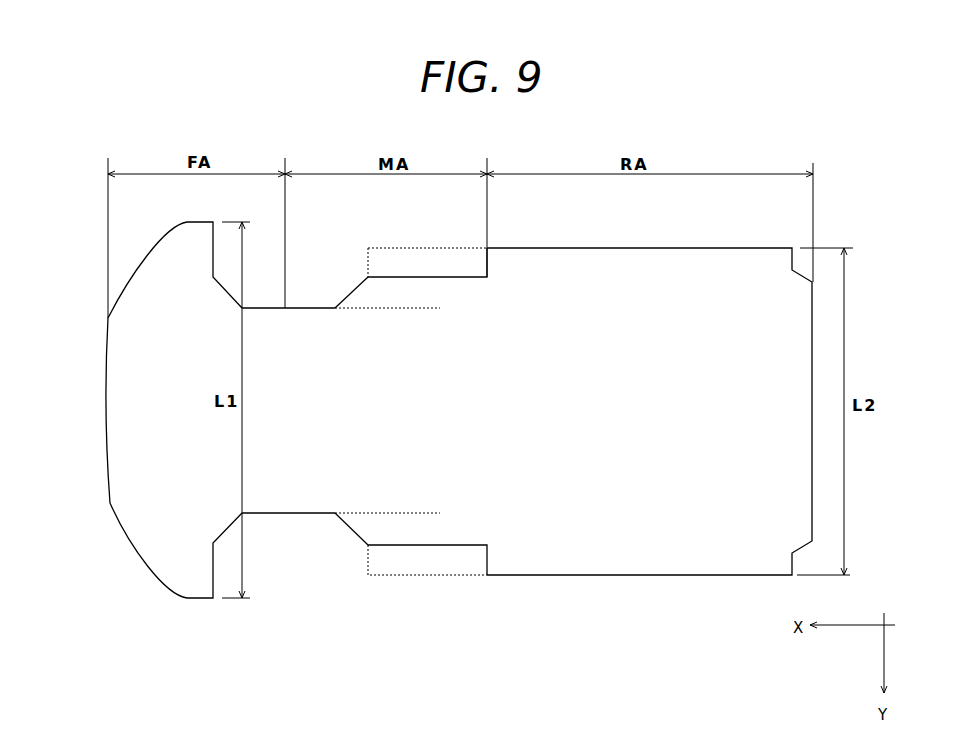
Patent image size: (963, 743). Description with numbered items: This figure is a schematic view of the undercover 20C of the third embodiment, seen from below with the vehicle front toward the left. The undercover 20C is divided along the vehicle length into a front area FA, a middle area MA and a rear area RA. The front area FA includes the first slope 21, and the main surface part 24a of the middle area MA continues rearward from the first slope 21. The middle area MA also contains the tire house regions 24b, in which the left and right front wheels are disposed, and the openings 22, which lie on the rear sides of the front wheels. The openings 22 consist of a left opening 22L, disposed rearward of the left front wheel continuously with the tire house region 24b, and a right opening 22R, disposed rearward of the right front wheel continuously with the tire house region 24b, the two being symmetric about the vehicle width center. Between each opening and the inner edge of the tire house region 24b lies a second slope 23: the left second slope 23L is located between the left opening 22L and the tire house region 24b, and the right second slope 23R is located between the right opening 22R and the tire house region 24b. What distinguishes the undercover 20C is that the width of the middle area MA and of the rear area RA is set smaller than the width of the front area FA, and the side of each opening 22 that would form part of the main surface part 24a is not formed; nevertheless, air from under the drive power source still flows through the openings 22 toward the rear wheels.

The undercover 20C is at (108, 131).
The first slope 21 is at (167, 388).
The openings 22 is at (402, 420).
The left opening 22L is at (397, 258).
The right opening 22R is at (420, 560).
The second slope 23 is at (399, 415).
The left second slope 23L is at (413, 287).
The right second slope 23R is at (410, 530).
The main surface part 24a is at (297, 430).
The tire house regions 24b is at (377, 411).